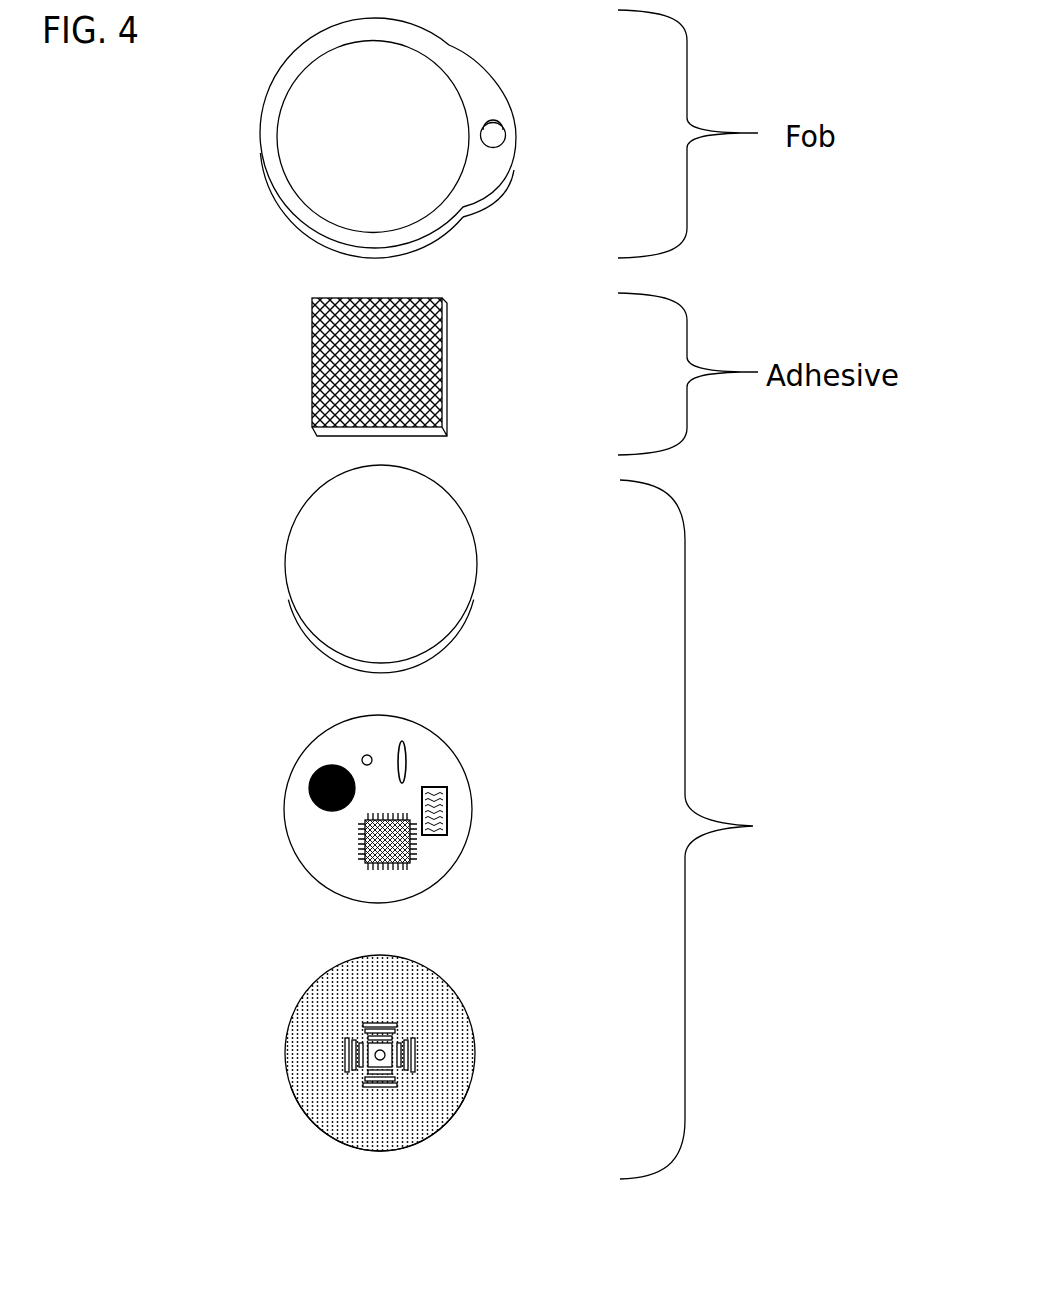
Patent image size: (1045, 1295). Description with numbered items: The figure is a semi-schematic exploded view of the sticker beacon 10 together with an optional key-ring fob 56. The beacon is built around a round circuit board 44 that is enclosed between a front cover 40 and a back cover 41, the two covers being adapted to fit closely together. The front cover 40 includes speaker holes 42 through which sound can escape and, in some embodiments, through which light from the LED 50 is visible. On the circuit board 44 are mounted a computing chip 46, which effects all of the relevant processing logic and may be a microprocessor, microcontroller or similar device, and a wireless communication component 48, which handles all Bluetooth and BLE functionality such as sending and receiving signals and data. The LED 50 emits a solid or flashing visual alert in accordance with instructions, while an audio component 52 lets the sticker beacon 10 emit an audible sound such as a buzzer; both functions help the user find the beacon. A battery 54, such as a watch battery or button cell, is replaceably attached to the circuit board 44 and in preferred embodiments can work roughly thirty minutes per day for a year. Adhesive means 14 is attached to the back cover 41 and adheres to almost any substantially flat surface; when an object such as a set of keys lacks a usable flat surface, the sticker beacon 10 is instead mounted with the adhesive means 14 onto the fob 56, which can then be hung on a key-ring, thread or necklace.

The sticker beacon 10 is at (516, 822).
The adhesive means 14 is at (388, 350).
The front cover 40 is at (374, 1057).
The back cover 41 is at (378, 538).
The speaker holes 42 is at (413, 1053).
The circuit board 44 is at (369, 813).
The computing chip 46 is at (408, 852).
The wireless communication component 48 is at (447, 812).
The LED 50 is at (402, 750).
The audio component 52 is at (363, 755).
The battery 54 is at (315, 775).
The fob 56 is at (340, 180).